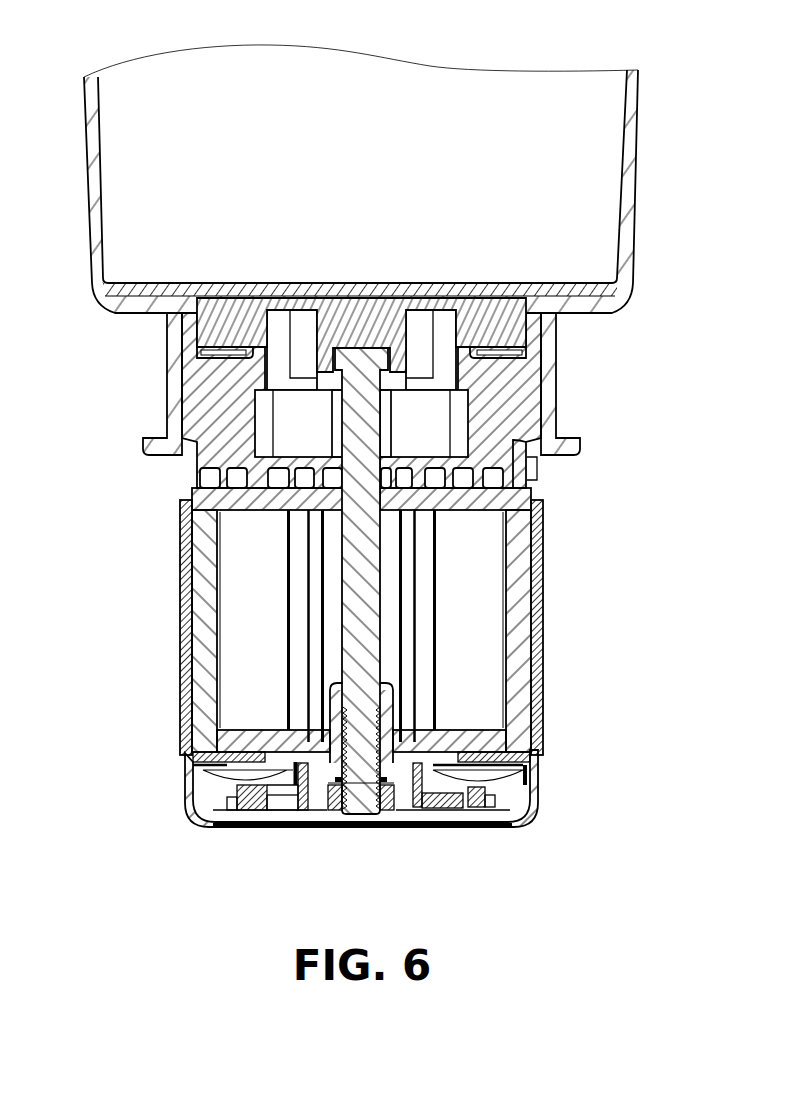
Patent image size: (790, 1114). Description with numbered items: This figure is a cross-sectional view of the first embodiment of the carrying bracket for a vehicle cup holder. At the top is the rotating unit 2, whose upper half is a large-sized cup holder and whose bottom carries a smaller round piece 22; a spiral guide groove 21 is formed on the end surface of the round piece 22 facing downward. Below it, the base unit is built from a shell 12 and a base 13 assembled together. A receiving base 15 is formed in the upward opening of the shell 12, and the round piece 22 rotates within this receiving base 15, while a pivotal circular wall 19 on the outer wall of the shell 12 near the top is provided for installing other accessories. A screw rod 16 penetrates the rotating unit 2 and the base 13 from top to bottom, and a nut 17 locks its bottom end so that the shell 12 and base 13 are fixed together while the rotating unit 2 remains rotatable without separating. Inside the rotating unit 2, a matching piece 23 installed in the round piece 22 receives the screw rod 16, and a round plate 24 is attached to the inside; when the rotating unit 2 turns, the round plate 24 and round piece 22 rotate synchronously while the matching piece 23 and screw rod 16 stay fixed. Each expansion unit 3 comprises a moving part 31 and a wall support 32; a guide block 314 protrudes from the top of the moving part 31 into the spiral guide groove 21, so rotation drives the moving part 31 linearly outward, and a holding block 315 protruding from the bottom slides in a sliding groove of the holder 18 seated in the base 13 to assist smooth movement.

The rotating unit 2 is at (384, 179).
The round plate 24 is at (142, 290).
The matching piece 23 is at (230, 310).
The screw rod 16 is at (355, 362).
The round piece 22 is at (532, 368).
The receiving base 15 is at (178, 395).
The pivotal circular wall 19 is at (560, 397).
The shell 12 is at (535, 470).
The spiral guide groove 21 is at (213, 478).
The expansion unit 3 is at (362, 625).
The moving part 31 is at (202, 625).
The wall support 32 is at (190, 672).
The guide block 314 is at (340, 480).
The holding block 315 is at (200, 768).
The base 13 is at (523, 817).
The holder 18 is at (285, 793).
The nut 17 is at (387, 810).